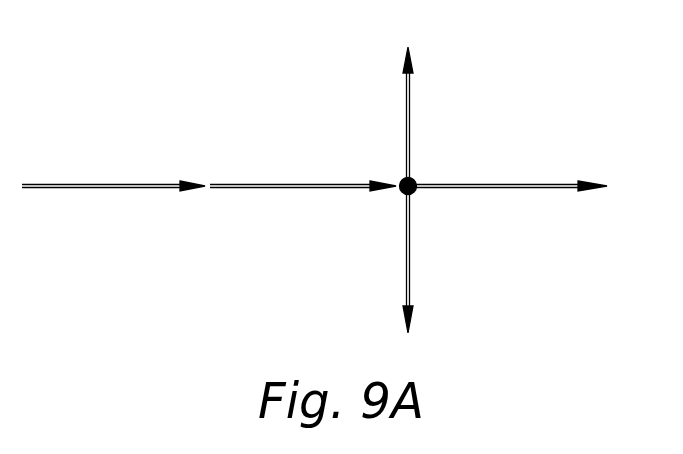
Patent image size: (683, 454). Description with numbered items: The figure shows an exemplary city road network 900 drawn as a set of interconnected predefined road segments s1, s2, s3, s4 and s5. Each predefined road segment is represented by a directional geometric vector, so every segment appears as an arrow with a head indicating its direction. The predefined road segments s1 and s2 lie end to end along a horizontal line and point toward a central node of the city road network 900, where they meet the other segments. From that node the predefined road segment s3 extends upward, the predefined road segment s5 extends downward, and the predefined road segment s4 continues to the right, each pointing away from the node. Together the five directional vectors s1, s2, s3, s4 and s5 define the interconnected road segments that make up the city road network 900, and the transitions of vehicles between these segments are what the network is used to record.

The city road network 900 is at (562, 91).
The predefined road segment s1 is at (113, 181).
The predefined road segment s2 is at (303, 181).
The predefined road segment s3 is at (416, 113).
The predefined road segment s4 is at (511, 181).
The predefined road segment s5 is at (418, 262).